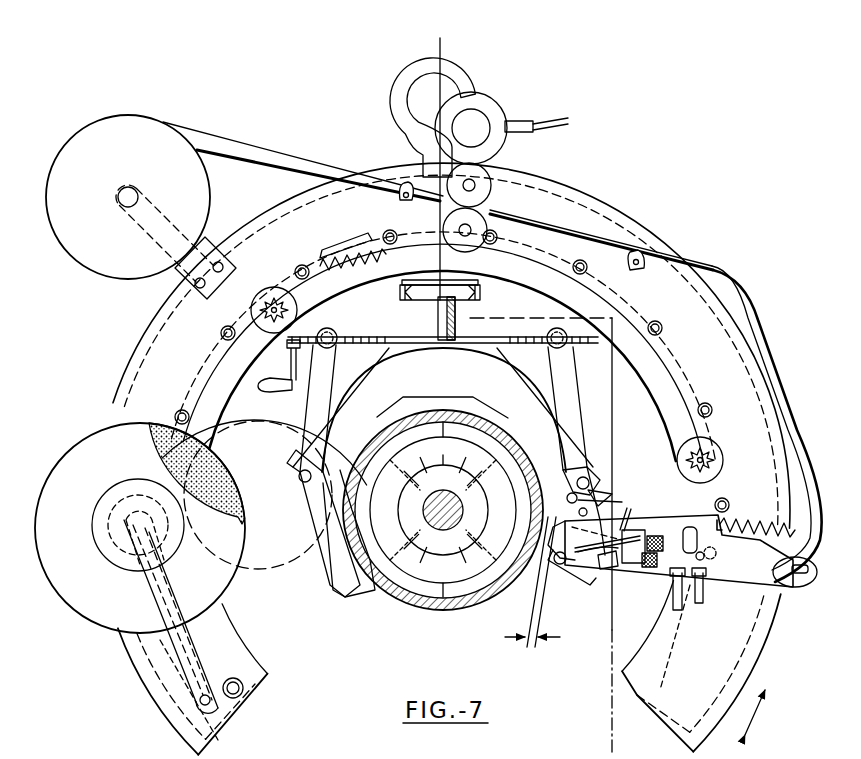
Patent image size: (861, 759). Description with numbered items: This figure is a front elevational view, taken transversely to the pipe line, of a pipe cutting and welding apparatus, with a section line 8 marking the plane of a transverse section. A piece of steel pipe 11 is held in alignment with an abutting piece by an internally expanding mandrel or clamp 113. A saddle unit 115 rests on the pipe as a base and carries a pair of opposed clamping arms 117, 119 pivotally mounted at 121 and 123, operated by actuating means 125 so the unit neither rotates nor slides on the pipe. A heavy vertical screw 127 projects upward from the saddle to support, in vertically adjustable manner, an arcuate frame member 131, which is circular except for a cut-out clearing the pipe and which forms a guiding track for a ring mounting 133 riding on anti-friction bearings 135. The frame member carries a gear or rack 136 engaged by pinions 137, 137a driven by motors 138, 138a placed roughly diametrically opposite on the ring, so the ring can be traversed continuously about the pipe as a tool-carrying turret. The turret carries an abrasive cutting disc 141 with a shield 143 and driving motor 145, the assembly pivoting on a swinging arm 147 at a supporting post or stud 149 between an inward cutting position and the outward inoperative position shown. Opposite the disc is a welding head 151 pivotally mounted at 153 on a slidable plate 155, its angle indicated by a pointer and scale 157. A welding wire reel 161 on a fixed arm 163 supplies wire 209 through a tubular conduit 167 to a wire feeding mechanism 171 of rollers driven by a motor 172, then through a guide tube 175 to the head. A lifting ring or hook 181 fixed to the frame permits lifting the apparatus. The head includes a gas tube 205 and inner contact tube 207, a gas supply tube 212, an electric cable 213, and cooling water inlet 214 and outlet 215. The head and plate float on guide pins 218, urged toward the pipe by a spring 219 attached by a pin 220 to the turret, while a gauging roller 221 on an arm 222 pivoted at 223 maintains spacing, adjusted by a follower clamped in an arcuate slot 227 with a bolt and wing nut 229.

The section line 8- 8 is at (442, 38).
The steel pipe 11 is at (410, 600).
The internally expanding mandrel or clamp 113 is at (437, 610).
The saddle unit 115 is at (465, 382).
The clamping arm 117 is at (362, 598).
The clamping arm 119 is at (538, 605).
The pivot 121 is at (298, 470).
The pivot 123 is at (565, 468).
The actuating means 125 is at (400, 336).
The vertical screw 127 is at (466, 301).
The arcuate frame member 131 is at (265, 676).
The ring mounting 133 is at (140, 341).
The anti-friction bearings 135 is at (386, 230).
The gear or rack 136 is at (386, 252).
The pinion 137 is at (264, 311).
The motor 138 is at (270, 295).
The pinion 137a is at (716, 451).
The motor 138a is at (680, 452).
The abrasive cutting disc 141 is at (216, 466).
The shield 143 is at (85, 605).
The driving motor 145 is at (110, 490).
The swinging arm 147 is at (185, 665).
The supporting post or stud 149 is at (236, 698).
The welding head 151 is at (605, 570).
The pivot 153 is at (713, 562).
The slidable plate 155 is at (630, 560).
The pointer and scale 157 is at (775, 600).
The welding wire reel 161 is at (92, 134).
The fixed arm 163 is at (176, 277).
The tubular conduit 167 is at (250, 147).
The wire feeding mechanism 171 is at (494, 177).
The motor 172 is at (496, 110).
The guide tube 175 is at (716, 270).
The lifting ring or hook 181 is at (395, 73).
The gas tube 205 is at (585, 582).
The inner contact tube 207 is at (562, 522).
The wire 209 is at (488, 217).
The tube 212 is at (700, 546).
The electric cable 213 is at (676, 612).
The inlet 214 is at (703, 604).
The outlet 215 is at (672, 592).
The guide pins 218 is at (797, 590).
The spring 219 is at (756, 528).
The pin 220 is at (725, 519).
The gauging roller 221 is at (530, 502).
The arm 222 is at (614, 500).
The pivot 223 is at (607, 492).
The arcuate slot 227 is at (605, 511).
The bolt and wing nut 229 is at (656, 537).